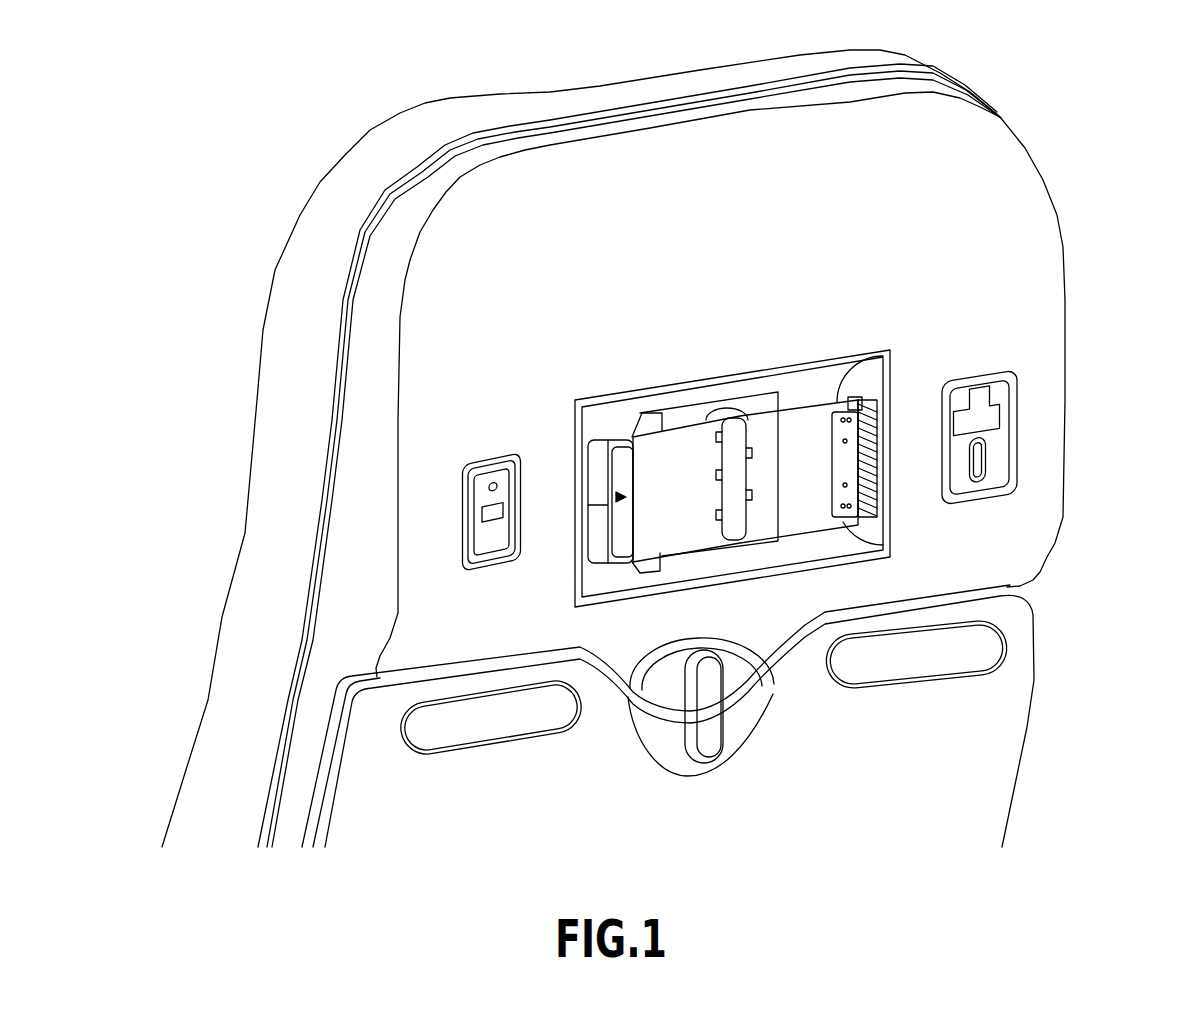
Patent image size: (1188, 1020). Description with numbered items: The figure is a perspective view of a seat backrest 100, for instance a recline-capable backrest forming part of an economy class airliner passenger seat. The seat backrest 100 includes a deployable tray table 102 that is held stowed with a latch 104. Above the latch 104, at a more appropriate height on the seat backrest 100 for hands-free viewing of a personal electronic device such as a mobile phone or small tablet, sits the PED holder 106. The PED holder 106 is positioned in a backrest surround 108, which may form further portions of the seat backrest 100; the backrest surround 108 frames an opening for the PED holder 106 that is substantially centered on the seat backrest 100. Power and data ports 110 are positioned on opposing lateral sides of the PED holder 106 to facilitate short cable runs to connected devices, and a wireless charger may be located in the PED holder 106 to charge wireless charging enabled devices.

The seat backrest 100 is at (316, 85).
The deployable tray table 102 is at (1020, 613).
The latch 104 is at (705, 745).
The PED holder 106 is at (708, 398).
The backrest surround 108 is at (1042, 227).
The power and data ports 110 is at (482, 493).